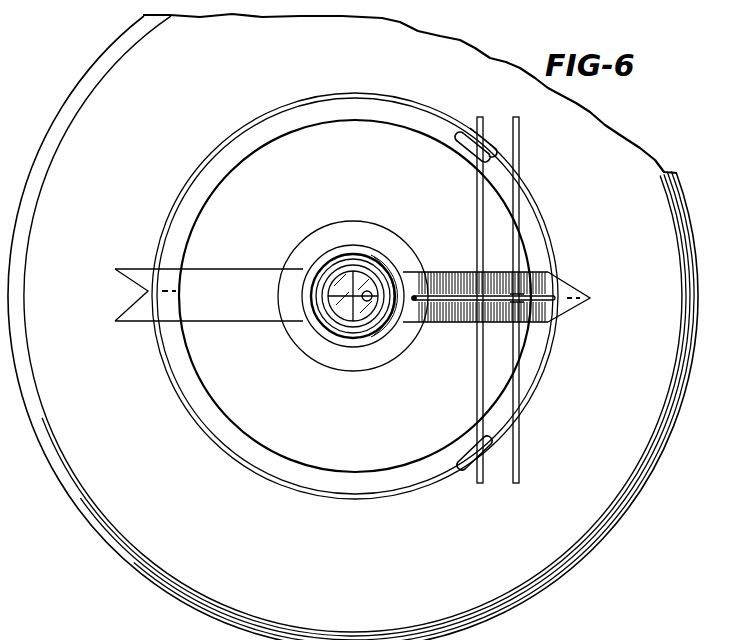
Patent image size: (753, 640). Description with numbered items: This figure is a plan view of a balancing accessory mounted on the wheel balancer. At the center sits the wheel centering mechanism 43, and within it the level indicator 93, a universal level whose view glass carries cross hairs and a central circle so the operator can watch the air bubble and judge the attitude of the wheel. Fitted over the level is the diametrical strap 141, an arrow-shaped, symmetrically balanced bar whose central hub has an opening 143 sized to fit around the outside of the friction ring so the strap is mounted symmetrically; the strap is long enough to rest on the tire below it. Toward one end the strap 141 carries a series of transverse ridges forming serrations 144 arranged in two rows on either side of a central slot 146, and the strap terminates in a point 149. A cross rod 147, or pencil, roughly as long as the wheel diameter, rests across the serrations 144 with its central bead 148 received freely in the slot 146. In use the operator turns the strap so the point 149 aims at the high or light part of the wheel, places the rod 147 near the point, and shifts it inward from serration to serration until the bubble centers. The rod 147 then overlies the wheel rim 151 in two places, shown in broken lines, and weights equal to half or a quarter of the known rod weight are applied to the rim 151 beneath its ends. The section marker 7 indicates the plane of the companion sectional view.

The section line 7- 7 is at (88, 245).
The wheel centering mechanism 43 is at (353, 235).
The level indicator 93 is at (372, 290).
The diametrical strap 141 is at (243, 321).
The opening 143 is at (332, 321).
The serrations 144 is at (455, 322).
The central slot 146 is at (414, 299).
The cross rod 147 is at (518, 421).
The central bead 148 is at (517, 300).
The point 149 is at (585, 302).
The wheel rim 151 is at (437, 470).